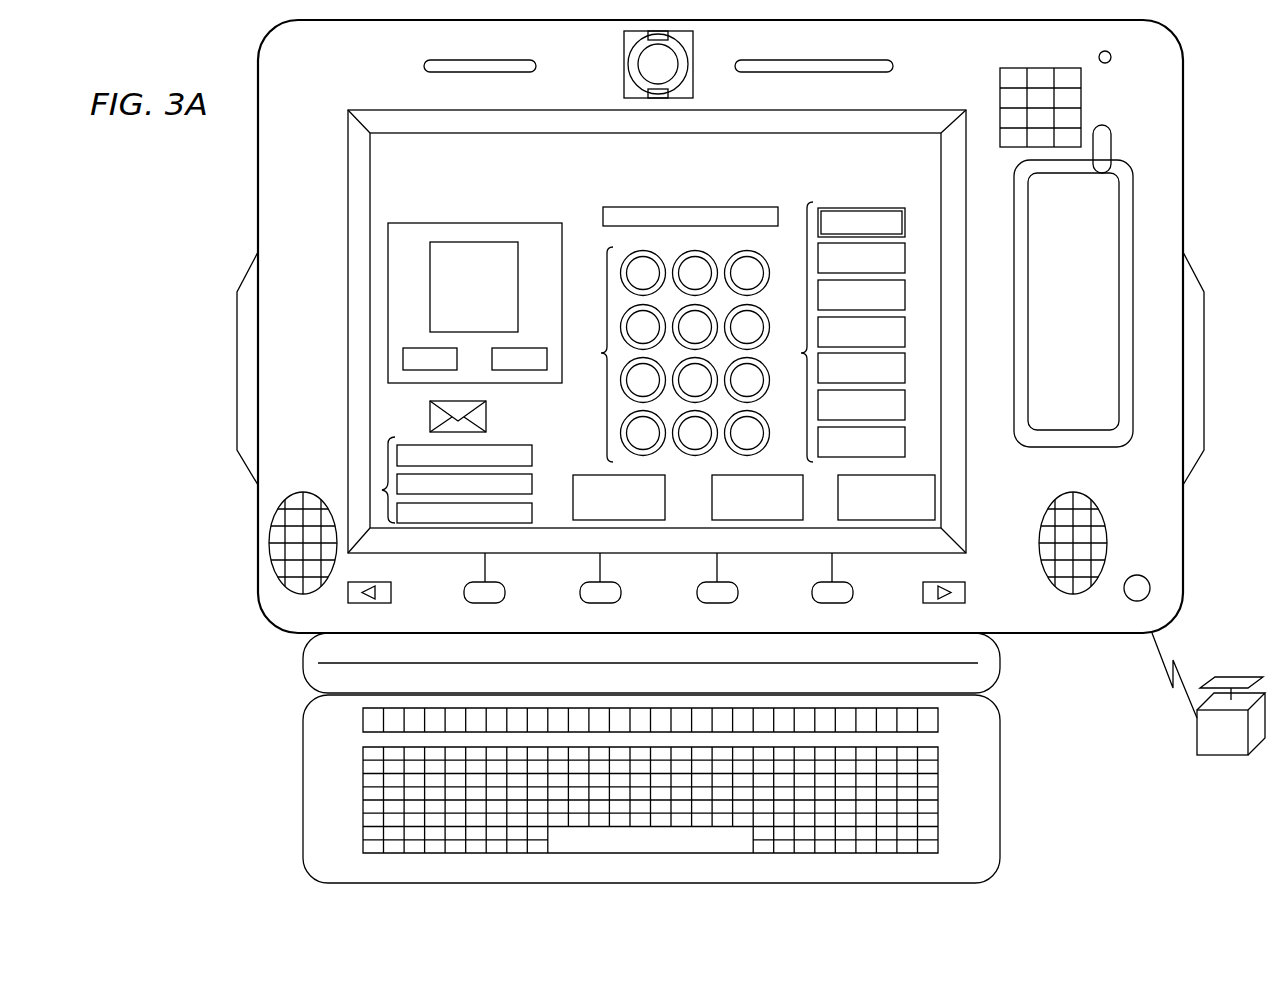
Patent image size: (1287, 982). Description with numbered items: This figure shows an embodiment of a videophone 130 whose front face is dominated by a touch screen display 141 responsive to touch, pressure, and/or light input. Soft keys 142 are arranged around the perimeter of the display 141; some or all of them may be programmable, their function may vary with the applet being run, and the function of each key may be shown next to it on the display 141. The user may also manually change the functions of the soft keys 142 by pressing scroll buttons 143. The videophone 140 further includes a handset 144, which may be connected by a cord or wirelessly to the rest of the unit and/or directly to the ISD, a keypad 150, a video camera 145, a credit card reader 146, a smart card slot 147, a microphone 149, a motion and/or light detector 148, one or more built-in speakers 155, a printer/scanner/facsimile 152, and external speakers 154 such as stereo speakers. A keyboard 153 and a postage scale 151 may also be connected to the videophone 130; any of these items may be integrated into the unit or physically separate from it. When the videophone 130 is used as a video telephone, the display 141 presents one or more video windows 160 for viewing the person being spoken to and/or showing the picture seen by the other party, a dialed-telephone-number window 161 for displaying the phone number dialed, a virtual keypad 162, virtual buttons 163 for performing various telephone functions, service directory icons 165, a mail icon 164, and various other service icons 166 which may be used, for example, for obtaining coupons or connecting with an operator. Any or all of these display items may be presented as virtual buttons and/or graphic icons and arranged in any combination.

The videophone 130 is at (1197, 46).
The videophone 140 is at (1183, 105).
The touch screen display 141 is at (357, 250).
The soft keys 142 is at (506, 593).
The scroll buttons 143 is at (391, 593).
The handset 144 is at (1085, 304).
The video camera 145 is at (624, 46).
The credit card reader 146 is at (457, 72).
The smart card slot 147 is at (857, 74).
The motion and/or light detector 148 is at (1110, 62).
The microphone 149 is at (1133, 575).
The keypad 150 is at (1013, 67).
The postage scale 151 is at (1197, 740).
The printer/scanner/facsimile 152 is at (1000, 663).
The keyboard 153 is at (1000, 790).
The external speakers 154 is at (237, 385).
The built-in speaker 155 is at (273, 568).
The video window 160 is at (535, 235).
The dialed-telephone-number window 161 is at (703, 218).
The virtual keypad 162 is at (669, 354).
The virtual buttons 163 is at (836, 332).
The mail icon 164 is at (487, 420).
The service directory icons 165 is at (382, 490).
The service icons 166 is at (588, 474).